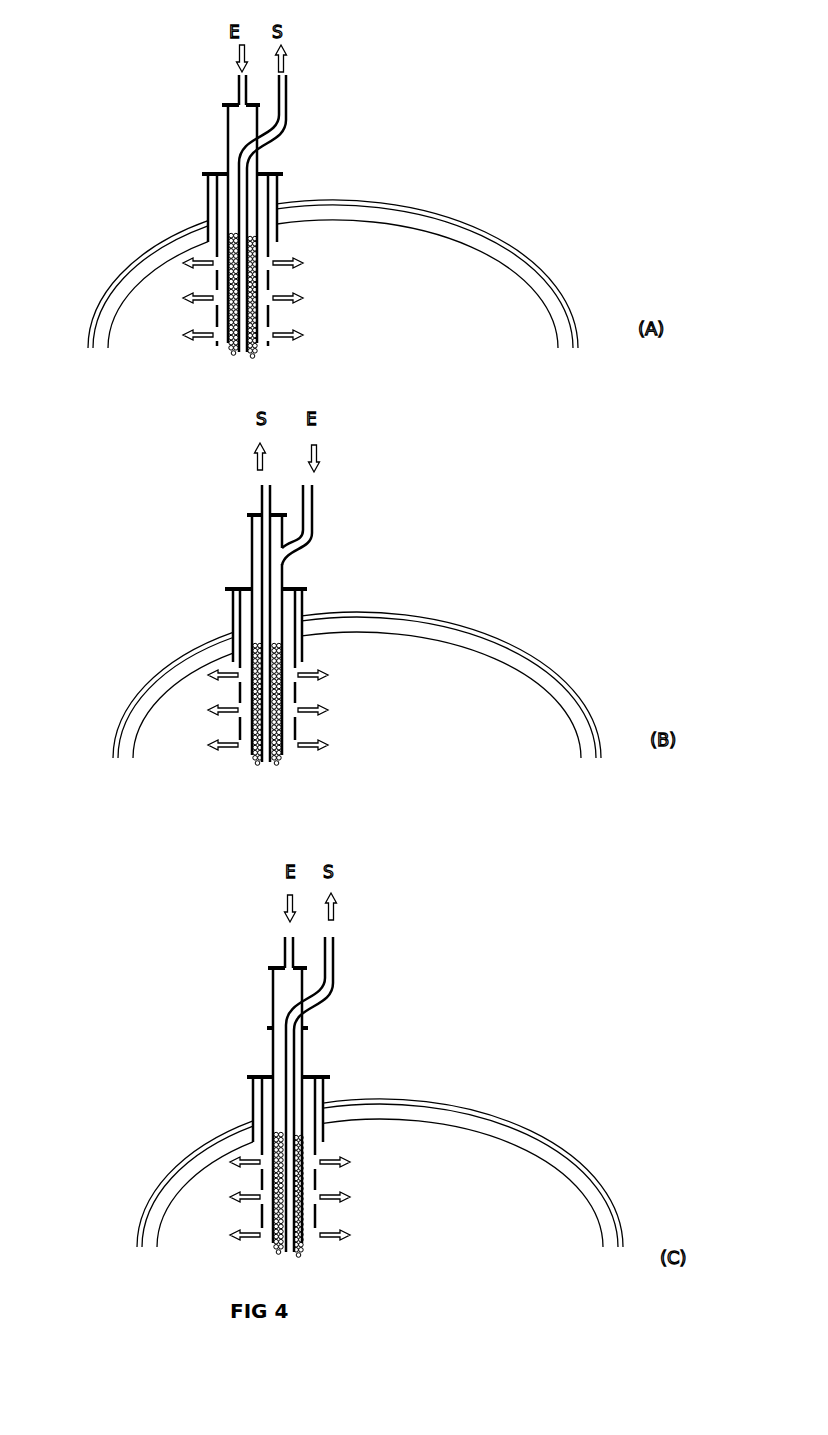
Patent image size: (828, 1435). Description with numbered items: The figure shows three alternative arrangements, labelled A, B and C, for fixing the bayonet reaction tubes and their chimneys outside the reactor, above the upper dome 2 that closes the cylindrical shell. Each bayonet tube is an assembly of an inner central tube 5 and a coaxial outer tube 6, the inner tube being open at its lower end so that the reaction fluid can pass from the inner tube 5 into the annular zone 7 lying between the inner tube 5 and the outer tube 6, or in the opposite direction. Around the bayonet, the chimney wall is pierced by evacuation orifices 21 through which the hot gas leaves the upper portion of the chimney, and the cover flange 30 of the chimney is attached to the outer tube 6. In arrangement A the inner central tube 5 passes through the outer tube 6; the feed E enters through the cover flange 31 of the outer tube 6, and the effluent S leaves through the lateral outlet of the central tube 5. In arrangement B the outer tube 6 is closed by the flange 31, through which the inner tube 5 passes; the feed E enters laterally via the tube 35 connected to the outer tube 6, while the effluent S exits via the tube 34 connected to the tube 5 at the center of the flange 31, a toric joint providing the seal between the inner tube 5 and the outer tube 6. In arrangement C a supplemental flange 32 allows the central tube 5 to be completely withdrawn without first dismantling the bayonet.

The upper dome 2 is at (520, 235).
The inner central tube 5 is at (292, 107).
The outer tube 6 is at (226, 120).
The annular zone 7 is at (234, 158).
The evacuation orifices 21 is at (290, 310).
The cover flange of the chimney 30 is at (294, 170).
The cover flange 31 is at (228, 100).
The supplemental flange 32 is at (260, 1029).
The tube connected to the inner tube 34 is at (257, 502).
The lateral feed inlet tube 35 is at (318, 523).